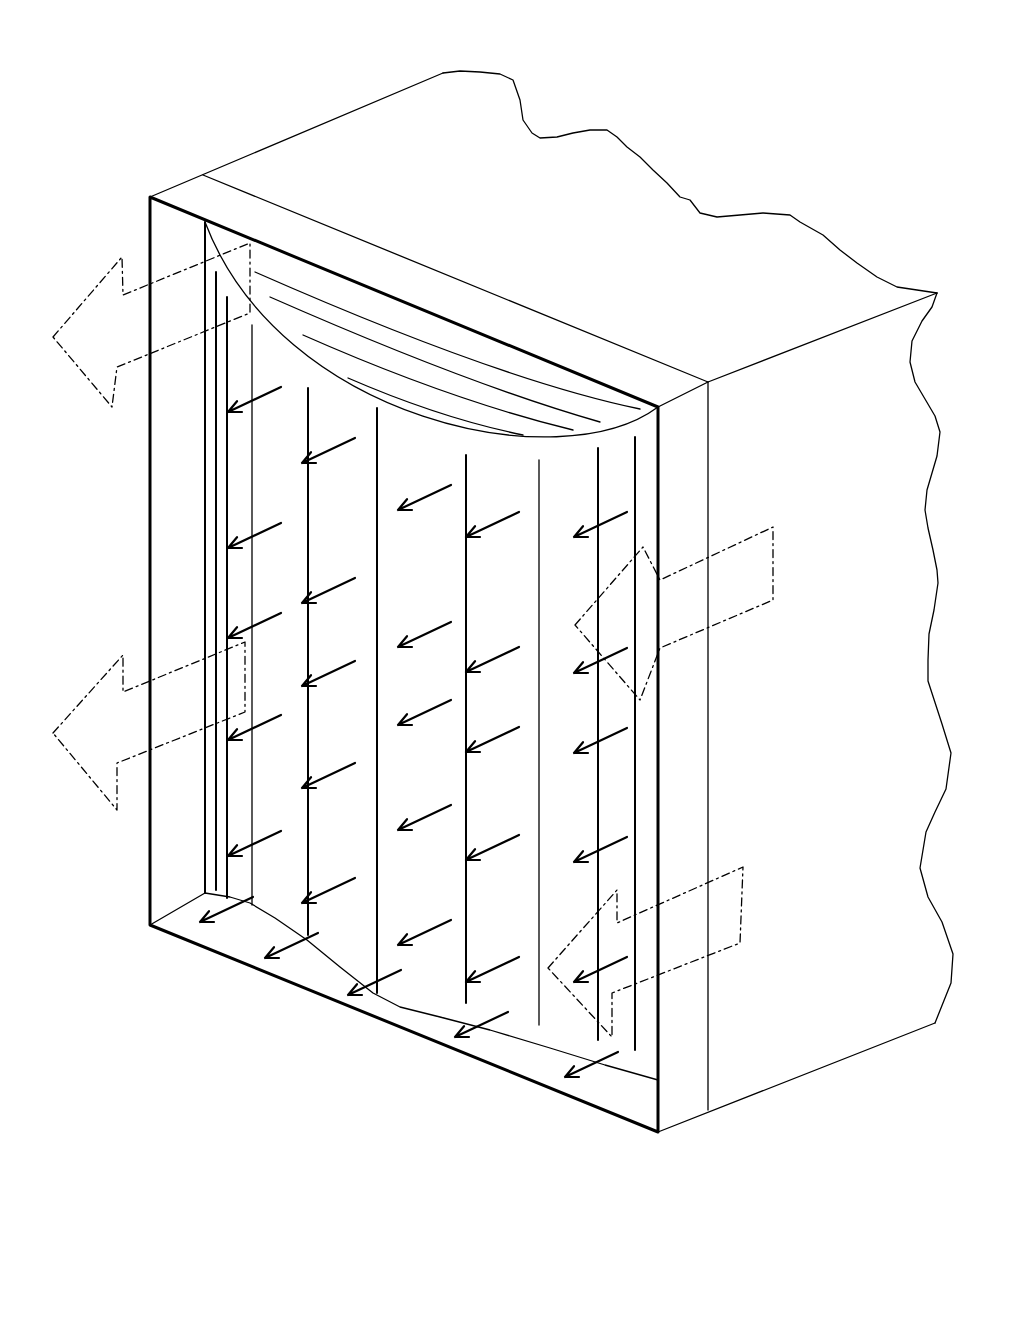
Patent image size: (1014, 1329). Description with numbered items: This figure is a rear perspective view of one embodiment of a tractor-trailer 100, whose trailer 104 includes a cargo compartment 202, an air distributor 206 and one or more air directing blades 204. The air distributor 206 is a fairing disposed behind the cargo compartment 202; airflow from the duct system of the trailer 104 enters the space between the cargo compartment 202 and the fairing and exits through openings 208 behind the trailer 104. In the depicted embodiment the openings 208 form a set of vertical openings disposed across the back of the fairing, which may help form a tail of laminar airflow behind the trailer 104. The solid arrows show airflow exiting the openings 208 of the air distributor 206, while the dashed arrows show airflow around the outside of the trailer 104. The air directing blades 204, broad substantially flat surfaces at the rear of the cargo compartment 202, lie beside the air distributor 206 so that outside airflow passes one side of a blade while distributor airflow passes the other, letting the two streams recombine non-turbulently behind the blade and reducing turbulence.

The tractor-trailer 100 is at (116, 27).
The trailer 104 is at (456, 22).
The cargo compartment 202 is at (487, 226).
The air directing blades 204 is at (310, 221).
The air distributor 206 is at (442, 587).
The openings 208 is at (540, 757).